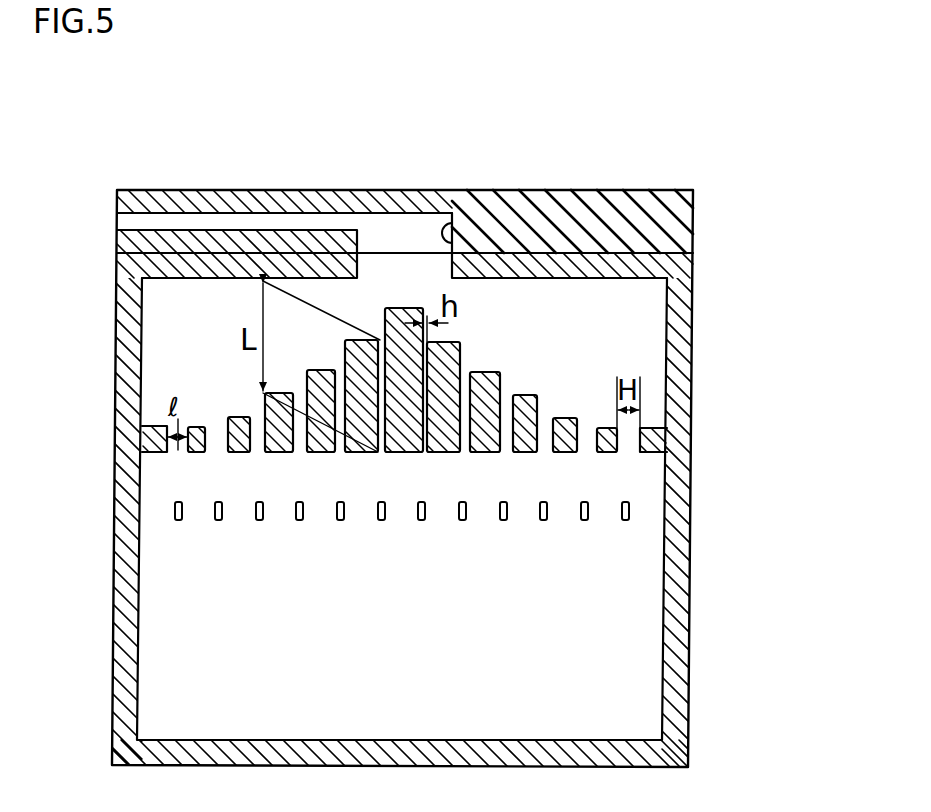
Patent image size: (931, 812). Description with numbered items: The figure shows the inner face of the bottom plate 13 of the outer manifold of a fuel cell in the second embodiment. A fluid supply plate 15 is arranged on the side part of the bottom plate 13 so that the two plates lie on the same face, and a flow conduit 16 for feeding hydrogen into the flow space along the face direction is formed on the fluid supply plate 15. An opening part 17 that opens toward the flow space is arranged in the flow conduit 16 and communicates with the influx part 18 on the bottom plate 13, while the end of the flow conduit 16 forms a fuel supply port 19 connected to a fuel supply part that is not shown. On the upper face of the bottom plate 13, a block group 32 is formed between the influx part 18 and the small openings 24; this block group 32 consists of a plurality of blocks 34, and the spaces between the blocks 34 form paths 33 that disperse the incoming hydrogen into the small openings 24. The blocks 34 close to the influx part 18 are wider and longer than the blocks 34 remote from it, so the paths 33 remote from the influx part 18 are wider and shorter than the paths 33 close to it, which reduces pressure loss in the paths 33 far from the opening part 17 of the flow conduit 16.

The bottom plate 13 is at (688, 685).
The fluid supply plate 15 is at (597, 212).
The flow conduit 16 is at (258, 218).
The opening part 17 is at (452, 223).
The influx part 18 is at (358, 266).
The fuel supply port 19 is at (117, 220).
The small openings 24 is at (213, 507).
The block group 32 is at (515, 362).
The paths 33 is at (215, 445).
The blocks 34 is at (537, 395).